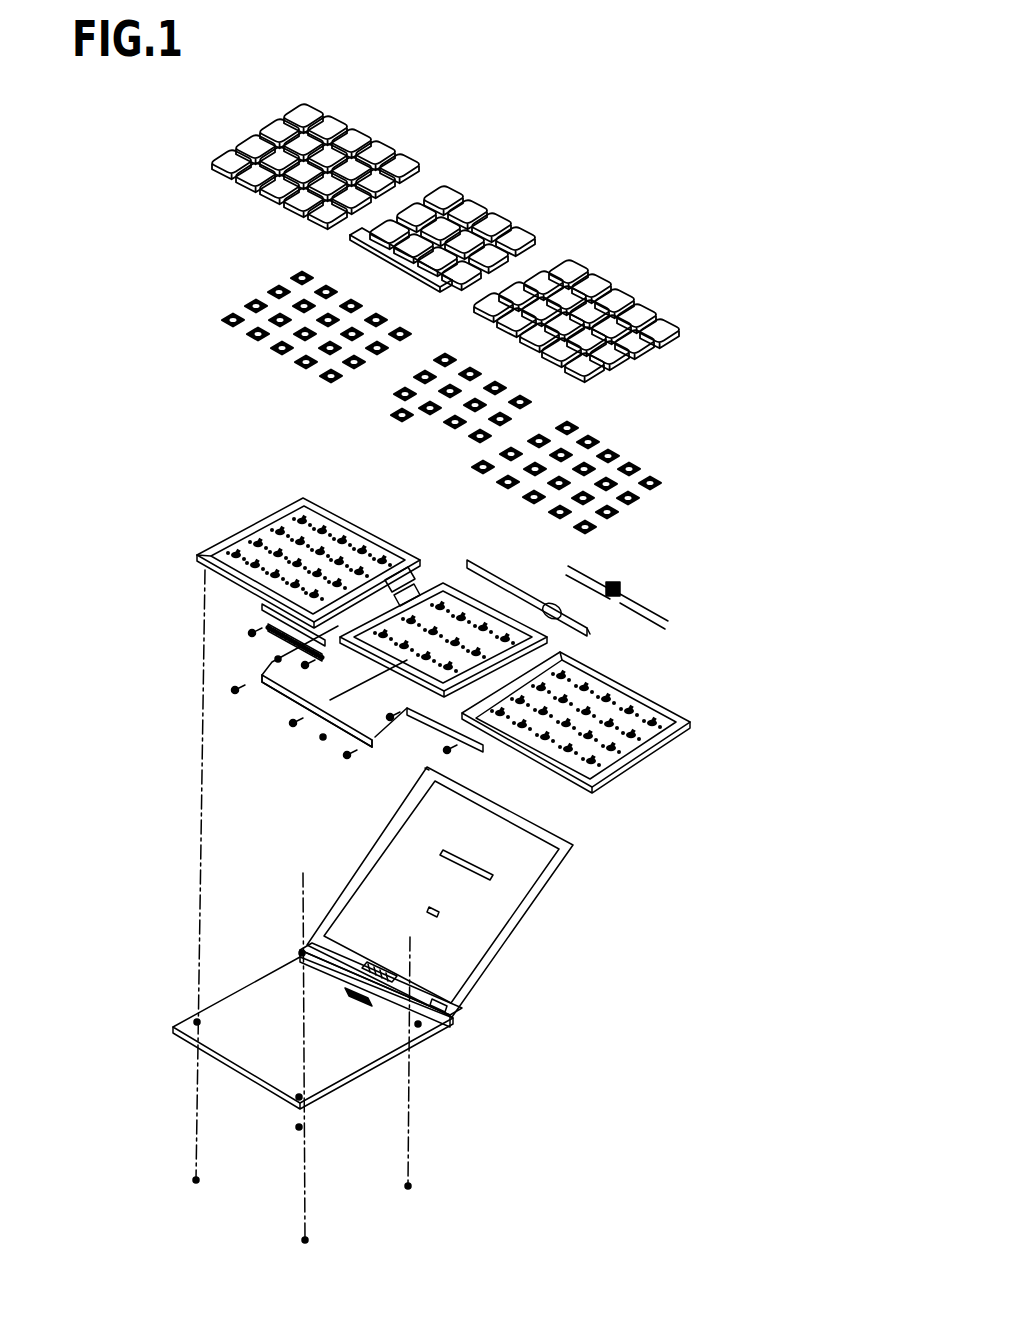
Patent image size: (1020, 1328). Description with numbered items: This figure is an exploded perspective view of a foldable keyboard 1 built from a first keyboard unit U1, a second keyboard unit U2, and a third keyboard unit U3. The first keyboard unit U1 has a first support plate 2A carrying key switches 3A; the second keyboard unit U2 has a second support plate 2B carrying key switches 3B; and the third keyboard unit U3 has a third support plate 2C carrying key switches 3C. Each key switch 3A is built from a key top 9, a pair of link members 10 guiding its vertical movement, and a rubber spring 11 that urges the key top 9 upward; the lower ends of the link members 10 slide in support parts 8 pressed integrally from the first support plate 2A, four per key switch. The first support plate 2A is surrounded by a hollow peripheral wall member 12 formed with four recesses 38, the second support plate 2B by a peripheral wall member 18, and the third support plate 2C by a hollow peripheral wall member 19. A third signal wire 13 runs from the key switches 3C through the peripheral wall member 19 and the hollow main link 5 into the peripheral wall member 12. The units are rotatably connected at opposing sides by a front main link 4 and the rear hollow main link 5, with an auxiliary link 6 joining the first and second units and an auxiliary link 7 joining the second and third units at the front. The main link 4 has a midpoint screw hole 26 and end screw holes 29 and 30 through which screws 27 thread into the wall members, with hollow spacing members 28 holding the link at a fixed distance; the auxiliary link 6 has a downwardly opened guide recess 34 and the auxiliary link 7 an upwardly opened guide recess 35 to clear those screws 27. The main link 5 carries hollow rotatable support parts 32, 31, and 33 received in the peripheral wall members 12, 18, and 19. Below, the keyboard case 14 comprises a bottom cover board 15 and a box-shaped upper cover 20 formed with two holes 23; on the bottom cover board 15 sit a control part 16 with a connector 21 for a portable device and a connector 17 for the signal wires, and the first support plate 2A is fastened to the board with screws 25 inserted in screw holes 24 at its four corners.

The keyboard 1 is at (103, 393).
The first support plate 2A is at (224, 525).
The second support plate 2B is at (372, 455).
The third support plate 2C is at (653, 765).
The key switches 3A is at (175, 100).
The key switches 3B is at (347, 392).
The key switches 3C is at (745, 318).
The main link 4 is at (300, 735).
The main link 5 is at (500, 597).
The auxiliary link 6 is at (284, 638).
The auxiliary link 7 is at (430, 766).
The support parts 8 is at (290, 503).
The key top 9 is at (247, 143).
The link members 10 is at (250, 298).
The rubber spring 11 is at (270, 516).
The peripheral wall member 12 is at (200, 553).
The third signal wire 13 is at (620, 589).
The keyboard case 14 is at (482, 1015).
The bottom cover board 15 is at (330, 1078).
The control part 16 is at (445, 1020).
The connector 17 is at (357, 995).
The peripheral wall member 18 is at (477, 573).
The peripheral wall member 19 is at (612, 690).
The upper cover 20 is at (523, 910).
The connector 21 is at (362, 965).
The holes 23 is at (480, 857).
The screw holes 24 is at (300, 958).
The screws 25 is at (295, 1125).
The screw hole 26 is at (292, 712).
The screw 27 is at (248, 634).
The spacing member 28 is at (276, 661).
The screw hole 29 is at (262, 684).
The screw hole 30 is at (370, 745).
The rotatable support part 31 is at (560, 608).
The rotatable support part 32 is at (450, 570).
The rotatable support part 33 is at (589, 632).
The guide recess 34 is at (280, 658).
The guide recess 35 is at (432, 733).
The recesses 38 is at (208, 572).
The first keyboard unit U1 is at (366, 120).
The second keyboard unit U2 is at (514, 211).
The third keyboard unit U3 is at (634, 275).